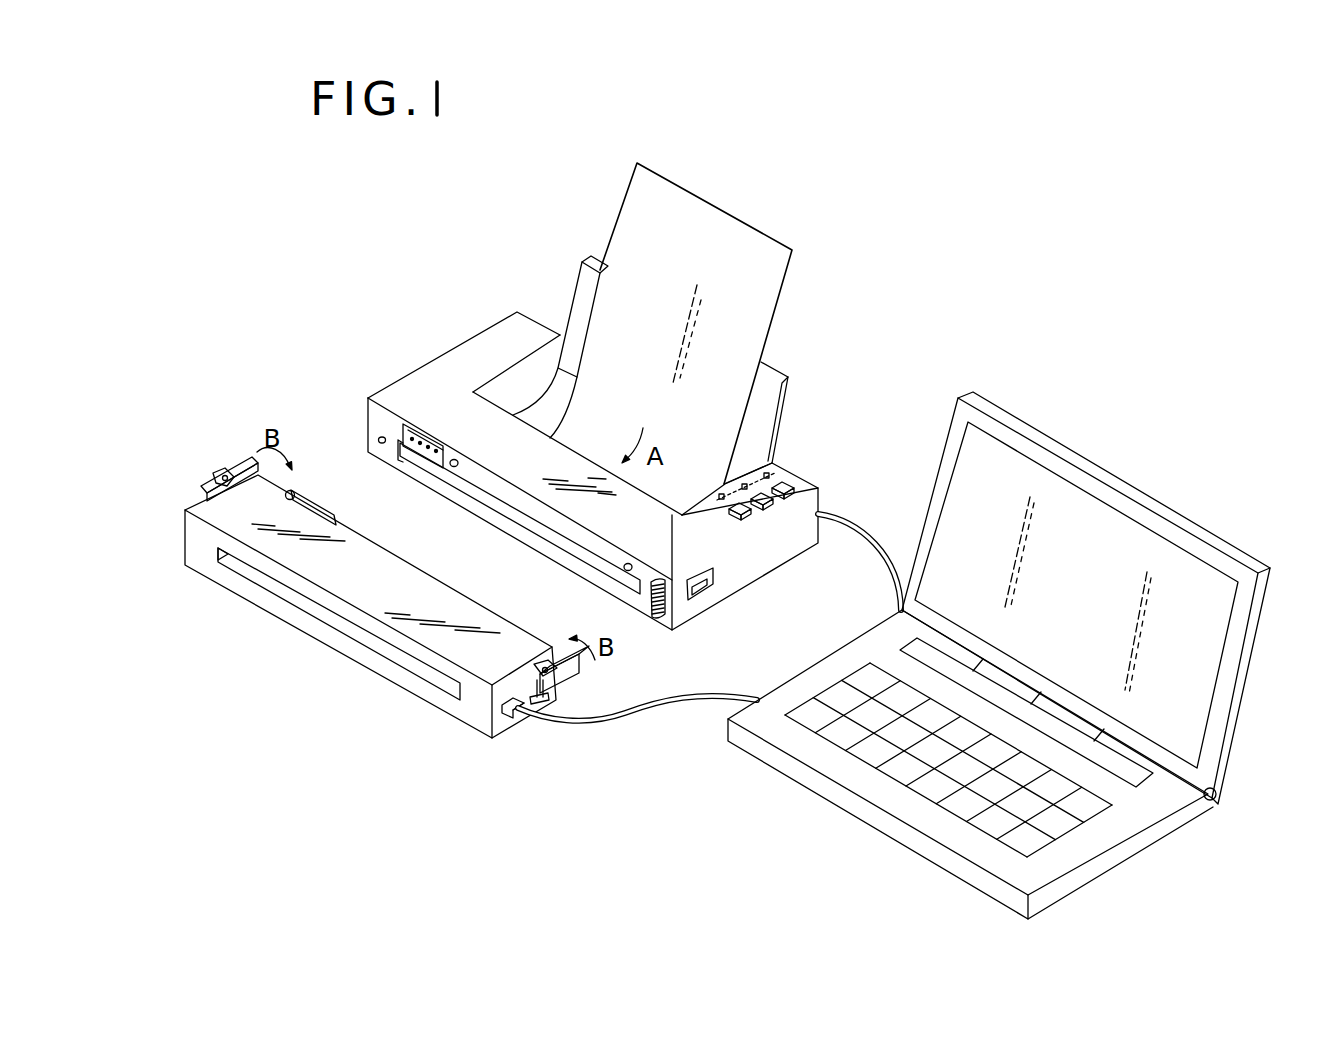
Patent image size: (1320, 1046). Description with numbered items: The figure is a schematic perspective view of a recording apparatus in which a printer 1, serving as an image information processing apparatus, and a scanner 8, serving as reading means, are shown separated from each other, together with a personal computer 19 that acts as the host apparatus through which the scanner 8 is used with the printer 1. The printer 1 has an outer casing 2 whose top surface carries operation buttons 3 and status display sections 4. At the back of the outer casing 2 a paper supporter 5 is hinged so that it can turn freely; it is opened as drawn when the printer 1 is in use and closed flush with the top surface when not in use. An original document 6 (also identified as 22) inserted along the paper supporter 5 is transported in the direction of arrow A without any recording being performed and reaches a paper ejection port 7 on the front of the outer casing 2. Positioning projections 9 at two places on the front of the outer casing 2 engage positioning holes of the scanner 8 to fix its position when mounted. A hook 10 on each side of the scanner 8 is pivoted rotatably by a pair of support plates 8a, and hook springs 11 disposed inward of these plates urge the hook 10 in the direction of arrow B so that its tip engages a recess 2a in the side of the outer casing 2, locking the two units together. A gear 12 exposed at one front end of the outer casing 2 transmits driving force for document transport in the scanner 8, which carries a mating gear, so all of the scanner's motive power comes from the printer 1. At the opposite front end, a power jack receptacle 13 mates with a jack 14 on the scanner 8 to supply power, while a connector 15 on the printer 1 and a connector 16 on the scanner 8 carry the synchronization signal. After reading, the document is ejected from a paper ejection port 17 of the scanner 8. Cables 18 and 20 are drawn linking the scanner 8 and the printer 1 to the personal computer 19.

The printer 1 is at (504, 306).
The outer casing 2 is at (467, 350).
The recess 2a is at (700, 585).
The operation buttons 3 is at (797, 470).
The status display sections 4 is at (770, 468).
The paper supporter 5 is at (768, 396).
The original document 6 is at (778, 278).
The original document 22 is at (696, 323).
The paper ejection port 7 is at (528, 537).
The scanner 8 is at (401, 552).
The support plates 8a is at (220, 473).
The positioning projections 9 is at (460, 466).
The hook 10 is at (242, 458).
The hook springs 11 is at (558, 653).
The gear 12 is at (648, 620).
The power jack receptacle 13 is at (378, 440).
The jack 14 is at (294, 488).
The connector 15 is at (427, 440).
The connector 16 is at (330, 508).
The paper ejection port 17 is at (408, 670).
The cable 18 is at (657, 712).
The personal computer 19 is at (1152, 538).
The cable 20 is at (858, 524).